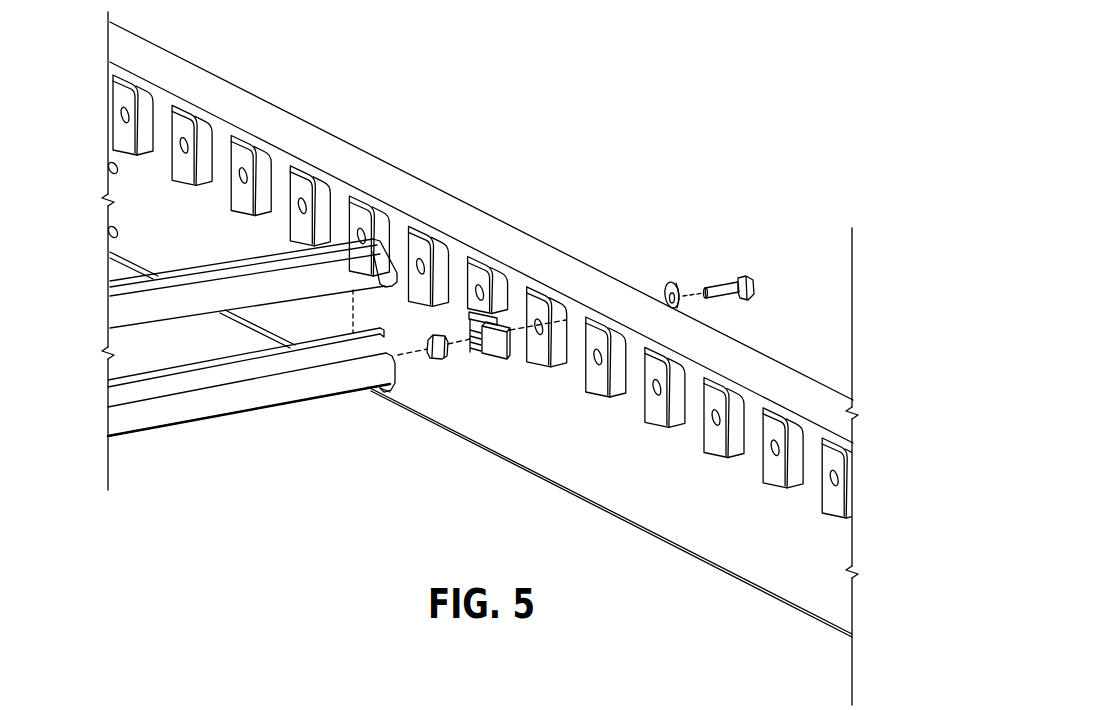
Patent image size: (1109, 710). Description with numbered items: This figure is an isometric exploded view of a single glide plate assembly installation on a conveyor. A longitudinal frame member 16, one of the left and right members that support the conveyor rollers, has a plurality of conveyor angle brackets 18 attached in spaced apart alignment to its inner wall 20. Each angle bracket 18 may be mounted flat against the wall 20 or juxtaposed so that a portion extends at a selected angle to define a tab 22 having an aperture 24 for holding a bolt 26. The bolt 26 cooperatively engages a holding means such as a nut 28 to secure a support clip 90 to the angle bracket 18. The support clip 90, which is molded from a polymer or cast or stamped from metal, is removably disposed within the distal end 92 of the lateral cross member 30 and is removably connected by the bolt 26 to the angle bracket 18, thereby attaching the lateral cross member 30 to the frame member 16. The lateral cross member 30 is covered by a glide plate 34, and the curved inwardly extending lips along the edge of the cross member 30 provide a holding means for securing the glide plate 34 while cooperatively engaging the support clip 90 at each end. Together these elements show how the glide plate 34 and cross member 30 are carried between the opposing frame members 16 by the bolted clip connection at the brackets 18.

The longitudinal frame member 16 is at (481, 232).
The conveyor angle bracket 18 is at (557, 289).
The inner wall 20 is at (753, 400).
The tab 22 is at (712, 437).
The aperture 24 is at (641, 386).
The bolt 26 is at (748, 279).
The nut 28 is at (440, 360).
The lateral cross member 30 is at (273, 396).
The glide plate 34 is at (254, 257).
The support clip 90 is at (496, 366).
The distal end 92 is at (389, 386).